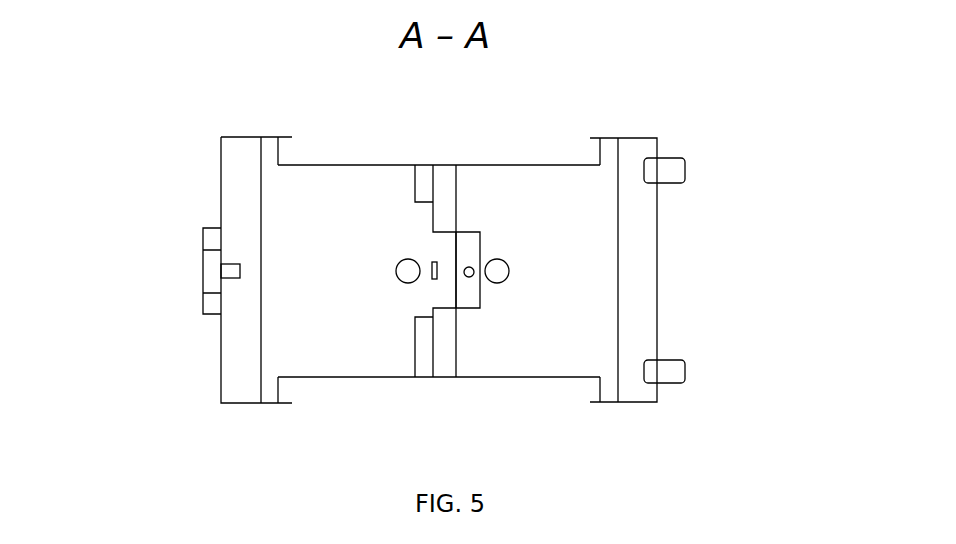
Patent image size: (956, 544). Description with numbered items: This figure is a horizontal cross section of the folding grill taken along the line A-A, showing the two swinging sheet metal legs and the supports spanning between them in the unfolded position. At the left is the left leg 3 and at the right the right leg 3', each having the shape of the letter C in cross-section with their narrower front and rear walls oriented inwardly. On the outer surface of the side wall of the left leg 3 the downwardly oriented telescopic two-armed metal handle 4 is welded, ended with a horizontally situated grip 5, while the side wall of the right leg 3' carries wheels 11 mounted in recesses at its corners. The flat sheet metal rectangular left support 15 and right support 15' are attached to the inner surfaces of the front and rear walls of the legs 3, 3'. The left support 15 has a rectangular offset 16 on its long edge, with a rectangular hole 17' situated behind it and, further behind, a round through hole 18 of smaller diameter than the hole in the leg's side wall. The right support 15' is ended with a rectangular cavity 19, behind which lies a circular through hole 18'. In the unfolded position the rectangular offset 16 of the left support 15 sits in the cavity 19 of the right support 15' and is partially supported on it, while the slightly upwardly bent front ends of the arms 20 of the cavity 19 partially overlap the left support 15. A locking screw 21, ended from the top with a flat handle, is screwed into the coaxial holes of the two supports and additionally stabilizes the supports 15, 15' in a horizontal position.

The left leg 3 is at (200, 295).
The right leg 3' is at (675, 302).
The telescopic two-armed metal handle 4 is at (212, 307).
The grip 5 is at (210, 283).
The wheels 11 is at (670, 172).
The left support 15 is at (359, 212).
The right support 15' is at (557, 197).
The rectangular offset 16 is at (450, 238).
The rectangular hole 17' is at (266, 192).
The round through hole 18 is at (252, 327).
The circular through hole 18' is at (644, 298).
The rectangular cavity 19 is at (457, 273).
The arms 20 is at (447, 177).
The locking screw 21 is at (469, 268).